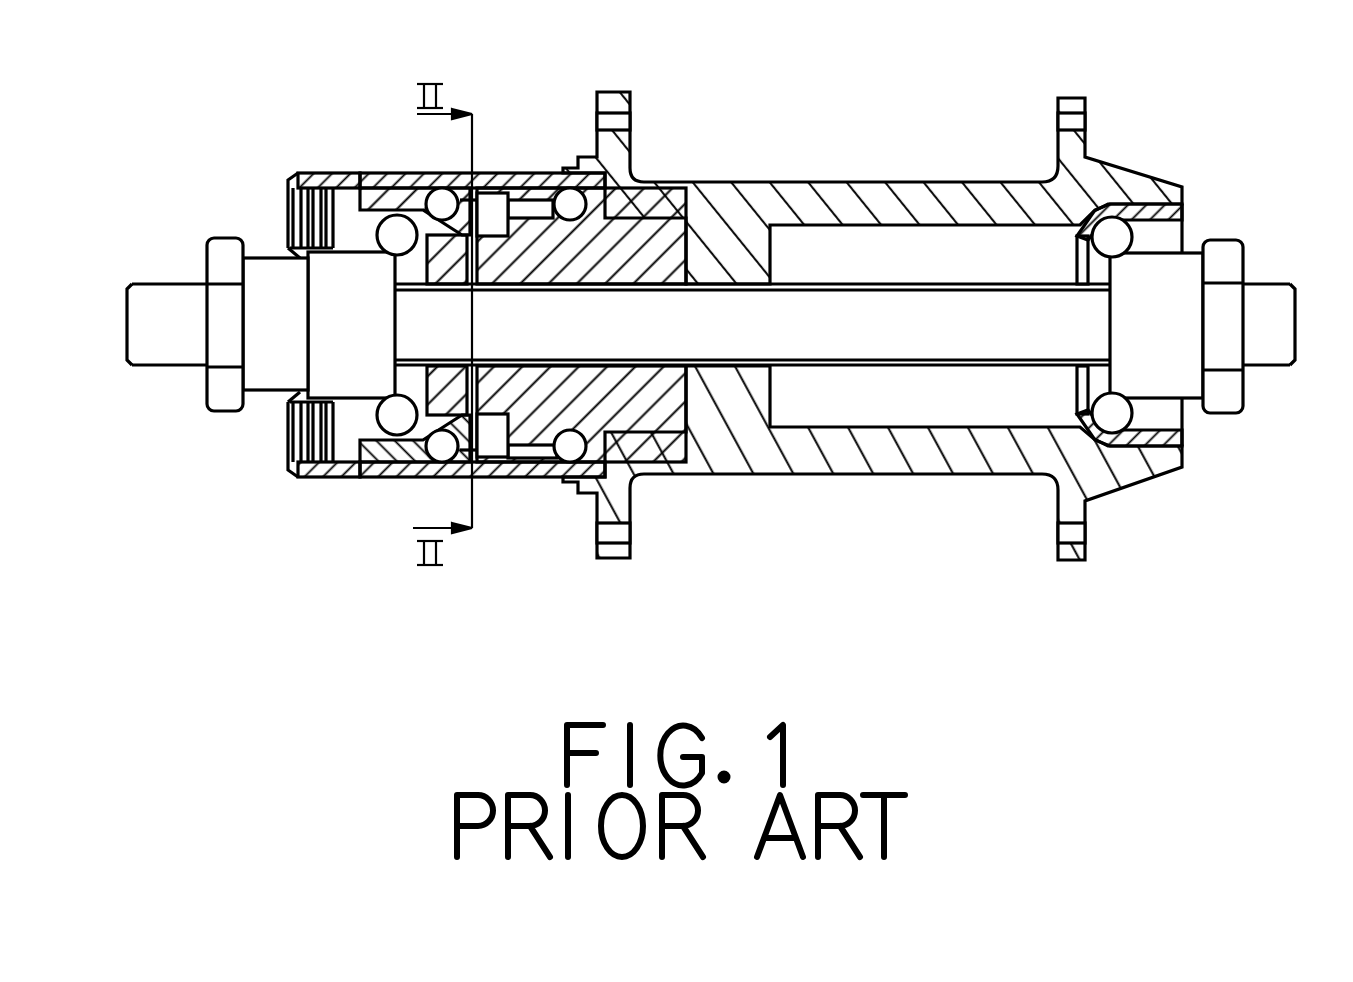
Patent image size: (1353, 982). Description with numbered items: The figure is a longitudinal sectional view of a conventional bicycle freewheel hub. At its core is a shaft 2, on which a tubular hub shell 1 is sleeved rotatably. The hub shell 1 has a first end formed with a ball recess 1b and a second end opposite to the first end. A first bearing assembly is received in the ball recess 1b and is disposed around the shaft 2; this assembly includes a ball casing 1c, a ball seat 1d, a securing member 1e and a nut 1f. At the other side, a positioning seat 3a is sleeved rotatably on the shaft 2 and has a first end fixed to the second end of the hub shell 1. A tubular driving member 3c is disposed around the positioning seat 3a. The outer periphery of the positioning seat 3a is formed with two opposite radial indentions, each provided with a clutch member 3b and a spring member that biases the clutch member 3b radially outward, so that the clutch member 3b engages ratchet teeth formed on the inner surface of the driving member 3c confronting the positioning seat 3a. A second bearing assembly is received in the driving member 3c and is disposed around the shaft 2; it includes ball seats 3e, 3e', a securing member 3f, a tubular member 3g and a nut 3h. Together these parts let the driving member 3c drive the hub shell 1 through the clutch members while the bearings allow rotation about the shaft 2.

The hub shell 1 is at (891, 172).
The ball recess 1b is at (1082, 228).
The ball casing 1c is at (1120, 245).
The ball seat 1d is at (1175, 212).
The securing member 1e is at (1175, 380).
The nut 1f is at (1227, 261).
The shaft 2 is at (917, 350).
The positioning seat 3a is at (532, 238).
The clutch member 3b is at (490, 212).
The driving member 3c is at (318, 178).
The ball seat 3e is at (469, 263).
The ball seat 3e' is at (363, 417).
The securing member 3f is at (330, 268).
The tubular member 3g is at (275, 280).
The nut 3h is at (218, 345).